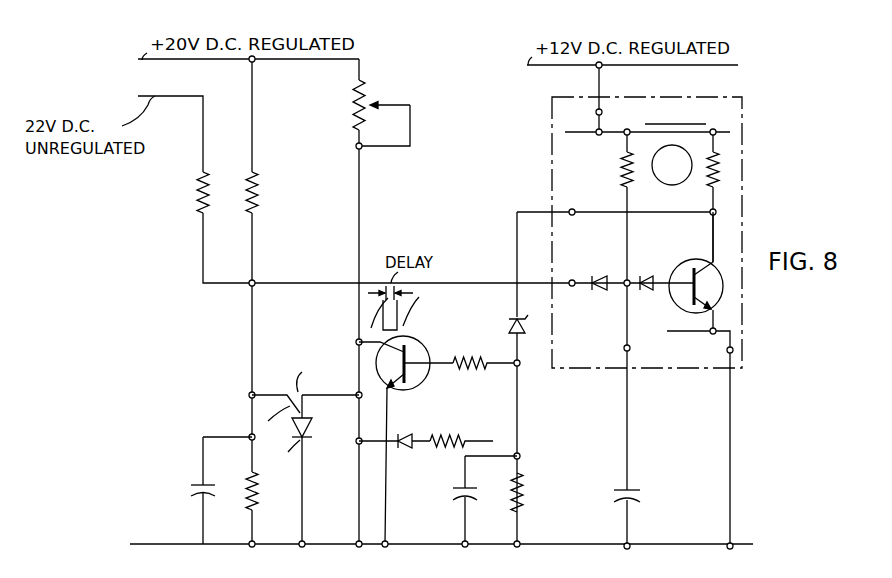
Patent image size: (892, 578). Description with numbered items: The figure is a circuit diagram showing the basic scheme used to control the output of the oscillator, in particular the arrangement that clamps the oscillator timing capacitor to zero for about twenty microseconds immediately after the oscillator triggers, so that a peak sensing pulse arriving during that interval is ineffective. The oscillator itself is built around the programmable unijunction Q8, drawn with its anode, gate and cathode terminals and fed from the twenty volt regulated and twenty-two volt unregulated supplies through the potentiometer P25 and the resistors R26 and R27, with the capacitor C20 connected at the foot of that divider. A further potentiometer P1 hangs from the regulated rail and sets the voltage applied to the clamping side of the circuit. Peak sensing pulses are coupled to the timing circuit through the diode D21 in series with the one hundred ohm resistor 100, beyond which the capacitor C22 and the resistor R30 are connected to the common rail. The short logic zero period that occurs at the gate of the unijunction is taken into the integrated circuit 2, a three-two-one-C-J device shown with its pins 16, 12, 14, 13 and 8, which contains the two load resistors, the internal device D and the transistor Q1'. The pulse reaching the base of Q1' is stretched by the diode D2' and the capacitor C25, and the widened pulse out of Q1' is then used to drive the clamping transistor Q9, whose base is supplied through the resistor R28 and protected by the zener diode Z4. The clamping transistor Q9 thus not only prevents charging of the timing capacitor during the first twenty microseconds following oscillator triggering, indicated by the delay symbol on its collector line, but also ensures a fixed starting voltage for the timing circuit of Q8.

The potentiometer P1 is at (352, 101).
The potentiometer P25 is at (196, 196).
The resistor R26 is at (258, 194).
The resistor R27 is at (245, 480).
The resistor R28 is at (466, 377).
The resistor R30 is at (524, 495).
The capacitor C20 is at (190, 490).
The capacitor C22 is at (452, 498).
The capacitor C25 is at (634, 494).
The diode D21 is at (403, 437).
The diode D2' is at (615, 302).
The programmable unijunction Q8 is at (308, 424).
The clamping transistor Q9 is at (421, 349).
The transistor Q1' is at (690, 273).
The zener diode Z4 is at (514, 330).
The 100 ohm resistor 100 is at (448, 450).
The integrated circuit I.C. 2 (321CJ) 2 is at (666, 97).
The pin 16 of I.C. 2 16 is at (596, 113).
The pin 12 of I.C. 2 12 is at (572, 208).
The pin 14 of I.C. 2 14 is at (572, 279).
The pin 13 of I.C. 2 13 is at (624, 348).
The pin 8 of I.C. 2 8 is at (726, 350).